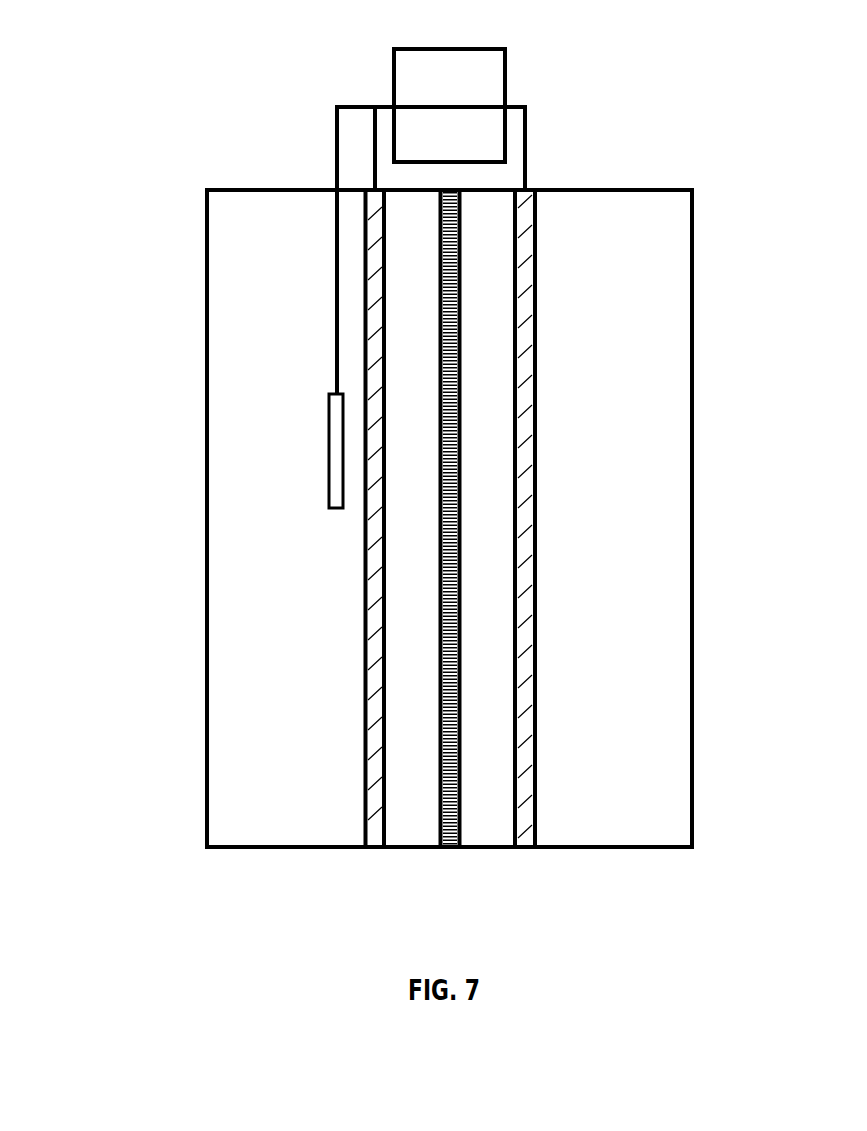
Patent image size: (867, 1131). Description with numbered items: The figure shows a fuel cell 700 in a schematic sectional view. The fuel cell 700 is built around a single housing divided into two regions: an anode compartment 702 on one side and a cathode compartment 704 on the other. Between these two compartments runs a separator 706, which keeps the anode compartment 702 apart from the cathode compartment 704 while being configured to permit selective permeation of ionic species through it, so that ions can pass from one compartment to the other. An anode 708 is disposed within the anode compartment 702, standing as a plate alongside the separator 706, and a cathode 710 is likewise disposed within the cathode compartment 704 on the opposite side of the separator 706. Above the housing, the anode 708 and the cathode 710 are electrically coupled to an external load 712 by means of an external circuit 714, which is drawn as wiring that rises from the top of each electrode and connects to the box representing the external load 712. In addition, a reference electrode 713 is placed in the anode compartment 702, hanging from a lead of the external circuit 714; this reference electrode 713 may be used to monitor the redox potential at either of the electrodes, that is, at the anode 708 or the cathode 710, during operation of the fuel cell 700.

The fuel cell 700 is at (196, 507).
The anode compartment 702 is at (286, 518).
The cathode compartment 704 is at (613, 518).
The separator 706 is at (462, 722).
The anode 708 is at (357, 722).
The cathode 710 is at (545, 722).
The external load 712 is at (449, 105).
The reference electrode 713 is at (328, 425).
The external circuit 714 is at (528, 158).